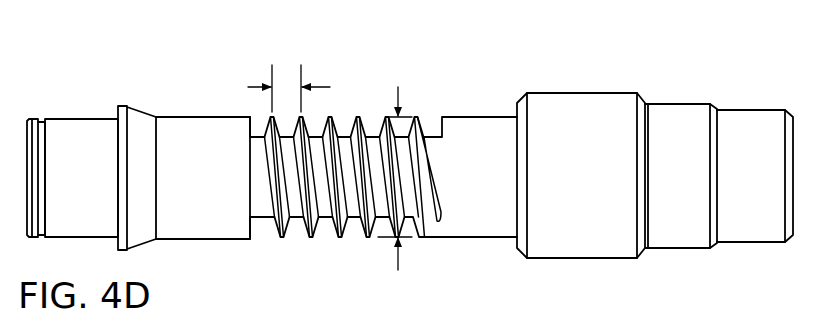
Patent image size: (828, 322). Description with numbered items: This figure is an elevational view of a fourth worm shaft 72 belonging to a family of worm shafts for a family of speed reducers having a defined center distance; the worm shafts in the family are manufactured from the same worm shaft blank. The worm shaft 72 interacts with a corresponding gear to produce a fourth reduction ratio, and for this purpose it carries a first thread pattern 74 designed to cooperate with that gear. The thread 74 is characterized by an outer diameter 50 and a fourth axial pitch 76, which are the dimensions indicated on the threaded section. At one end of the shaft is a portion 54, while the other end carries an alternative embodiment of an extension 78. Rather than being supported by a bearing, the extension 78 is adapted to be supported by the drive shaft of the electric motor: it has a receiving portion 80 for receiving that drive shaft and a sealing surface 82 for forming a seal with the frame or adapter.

The proximal cylindrical portion 54 is at (80, 119).
The fourth worm shaft 72 is at (212, 106).
The first thread pattern 74 is at (358, 117).
The fourth axial pitch 76 is at (285, 78).
The outer diameter 50 is at (398, 90).
The extension 78 is at (594, 90).
The sealing surface 82 is at (677, 100).
The receiving portion 80 is at (747, 110).